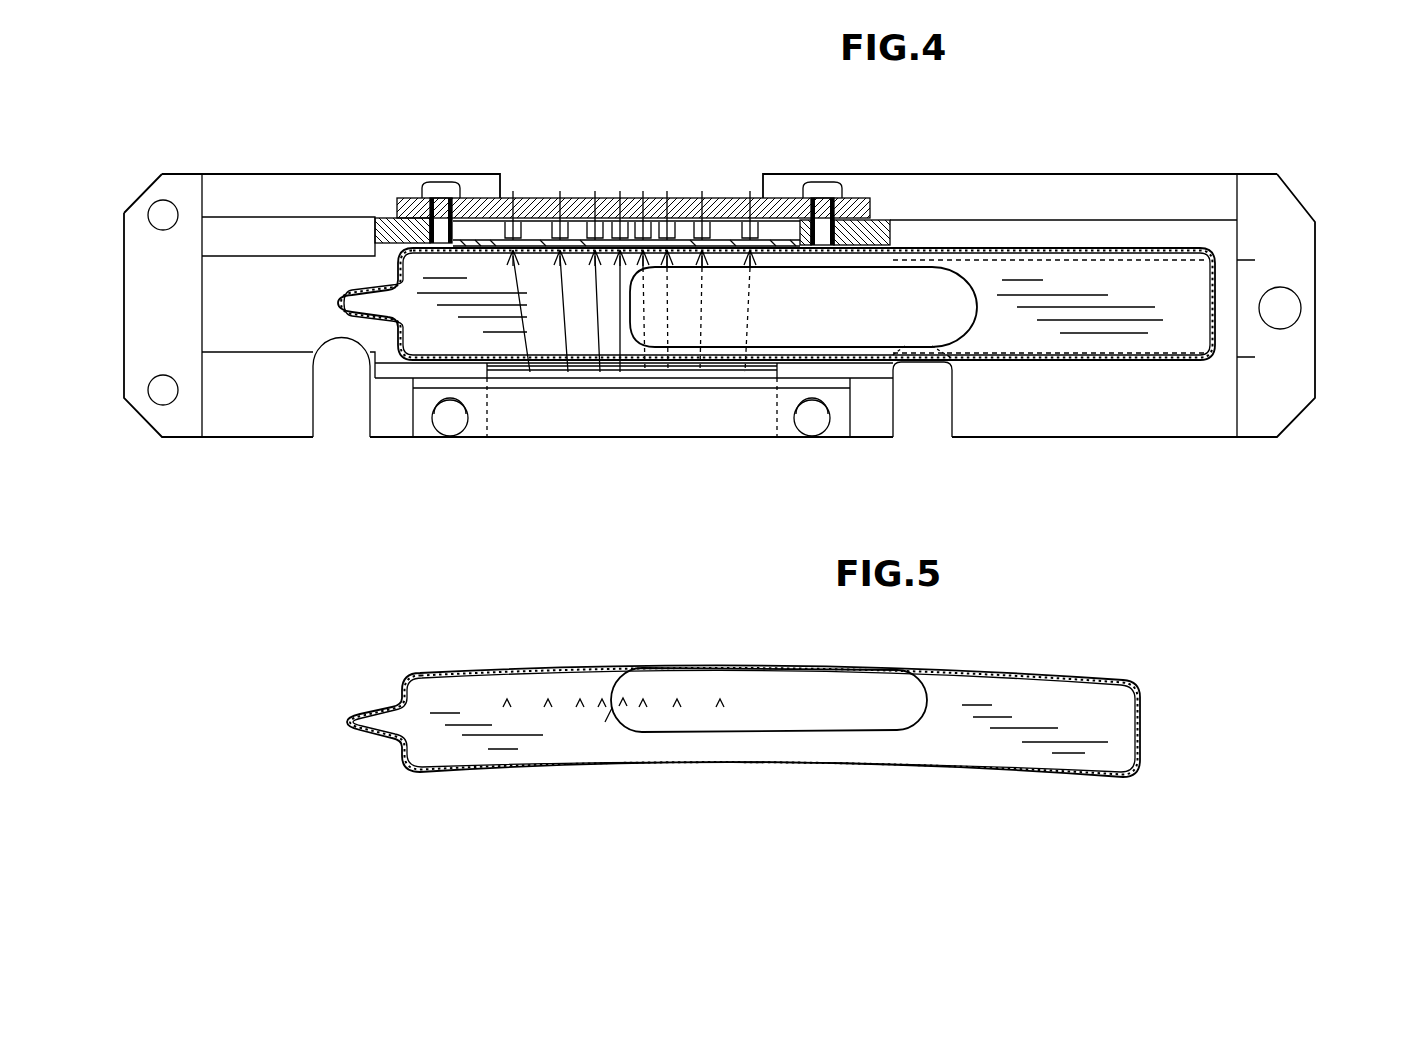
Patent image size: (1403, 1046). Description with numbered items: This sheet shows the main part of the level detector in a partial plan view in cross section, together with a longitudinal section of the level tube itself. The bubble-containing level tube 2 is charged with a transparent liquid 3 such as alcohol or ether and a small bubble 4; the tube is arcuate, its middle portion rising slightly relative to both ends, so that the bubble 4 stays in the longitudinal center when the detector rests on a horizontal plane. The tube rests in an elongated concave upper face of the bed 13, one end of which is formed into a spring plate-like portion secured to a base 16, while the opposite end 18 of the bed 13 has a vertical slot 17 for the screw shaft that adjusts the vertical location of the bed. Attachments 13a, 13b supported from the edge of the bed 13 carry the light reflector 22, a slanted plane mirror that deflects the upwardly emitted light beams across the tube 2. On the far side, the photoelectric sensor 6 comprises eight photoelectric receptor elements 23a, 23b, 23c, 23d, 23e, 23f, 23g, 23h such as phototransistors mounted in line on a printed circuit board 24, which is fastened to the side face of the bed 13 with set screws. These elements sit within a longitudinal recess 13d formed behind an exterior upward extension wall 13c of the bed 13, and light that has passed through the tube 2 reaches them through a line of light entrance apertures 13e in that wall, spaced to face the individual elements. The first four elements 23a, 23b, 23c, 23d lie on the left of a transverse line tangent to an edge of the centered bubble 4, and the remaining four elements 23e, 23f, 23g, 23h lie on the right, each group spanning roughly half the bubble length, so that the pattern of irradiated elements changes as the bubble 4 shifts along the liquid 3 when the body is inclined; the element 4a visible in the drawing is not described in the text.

In FIG. 4, the bubble-containing level tube 2 is at (1000, 363).
In FIG. 5, the bubble-containing level tube 2 is at (1000, 668).
In FIG. 4, the transparent liquid 3 is at (1068, 328).
In FIG. 5, the transparent liquid 3 is at (1008, 733).
In FIG. 4, the bubble 4 is at (923, 298).
In FIG. 5, the bubble 4 is at (842, 698).
In FIG. 4, the electrode plate 4a is at (614, 258).
In FIG. 5, the electrode plate 4a is at (605, 722).
In FIG. 4, the photoelectric sensor 6 is at (642, 192).
In FIG. 4, the bed 13 is at (1135, 410).
In FIG. 4, the attachment 13a is at (872, 415).
In FIG. 4, the attachment 13b is at (393, 412).
In FIG. 4, the exterior upward extension wall 13c is at (386, 222).
In FIG. 4, the longitudinal recess 13d is at (480, 226).
In FIG. 4, the light entrance apertures 13e is at (748, 256).
In FIG. 4, the base 16 is at (180, 413).
In FIG. 4, the vertical slot 17 is at (1285, 303).
In FIG. 4, the opposite end of the bed 18 is at (1292, 368).
In FIG. 4, the light reflector 22 is at (640, 413).
In FIG. 4, the photoelectric receptor element 23a is at (512, 226).
In FIG. 5, the photoelectric receptor element 23a is at (506, 700).
In FIG. 4, the photoelectric receptor element 23b is at (560, 226).
In FIG. 5, the photoelectric receptor element 23b is at (547, 706).
In FIG. 4, the photoelectric receptor element 23c is at (595, 226).
In FIG. 5, the photoelectric receptor element 23c is at (579, 700).
In FIG. 4, the photoelectric receptor element 23d is at (620, 226).
In FIG. 5, the photoelectric receptor element 23d is at (601, 707).
In FIG. 4, the photoelectric receptor element 23e is at (643, 226).
In FIG. 5, the photoelectric receptor element 23e is at (623, 700).
In FIG. 4, the photoelectric receptor element 23f is at (667, 224).
In FIG. 5, the photoelectric receptor element 23f is at (644, 707).
In FIG. 4, the photoelectric receptor element 23g is at (702, 224).
In FIG. 5, the photoelectric receptor element 23g is at (677, 700).
In FIG. 4, the photoelectric receptor element 23h is at (750, 222).
In FIG. 5, the photoelectric receptor element 23h is at (720, 706).
In FIG. 4, the printed circuit board 24 is at (860, 222).